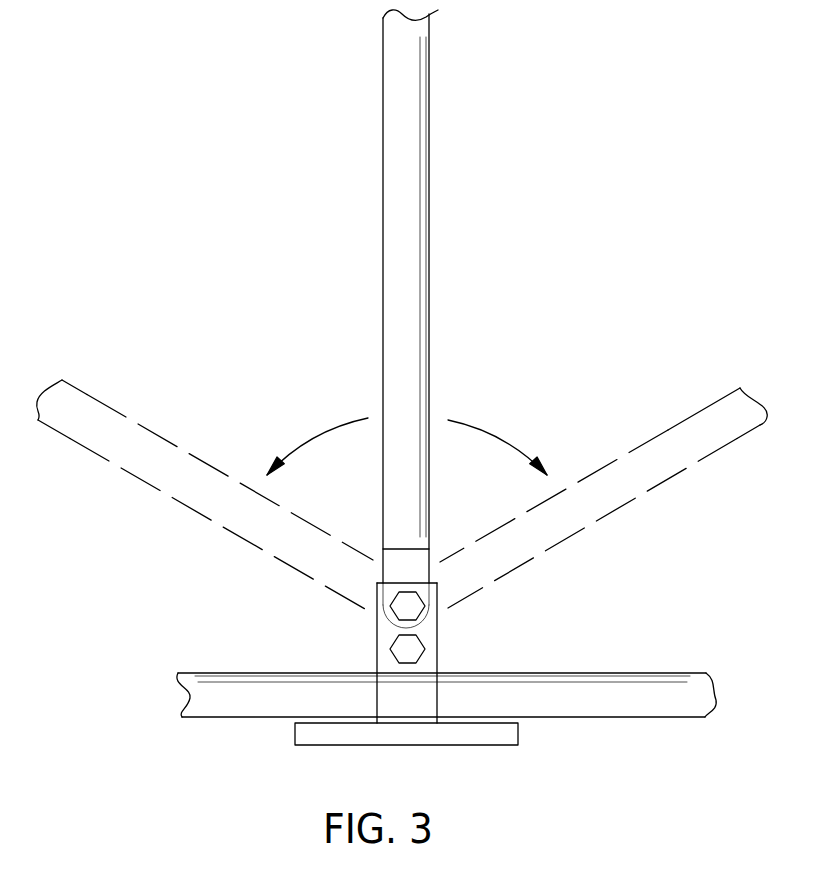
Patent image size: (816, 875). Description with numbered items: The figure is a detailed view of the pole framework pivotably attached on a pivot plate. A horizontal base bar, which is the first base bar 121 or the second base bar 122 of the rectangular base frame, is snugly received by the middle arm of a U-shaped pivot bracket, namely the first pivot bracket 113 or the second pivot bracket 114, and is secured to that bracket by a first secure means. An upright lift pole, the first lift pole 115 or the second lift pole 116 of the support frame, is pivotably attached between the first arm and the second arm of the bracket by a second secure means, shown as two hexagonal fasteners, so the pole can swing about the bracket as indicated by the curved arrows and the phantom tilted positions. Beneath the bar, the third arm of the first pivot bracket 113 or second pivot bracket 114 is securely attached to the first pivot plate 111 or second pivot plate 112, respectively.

The first pivot plate 111 is at (320, 755).
The second pivot plate 112 is at (295, 733).
The first pivot bracket 113 is at (314, 653).
The second pivot bracket 114 is at (377, 633).
The first lift pole 115 is at (335, 319).
The second lift pole 116 is at (383, 268).
The first base bar 121 is at (446, 659).
The second base bar 122 is at (553, 672).